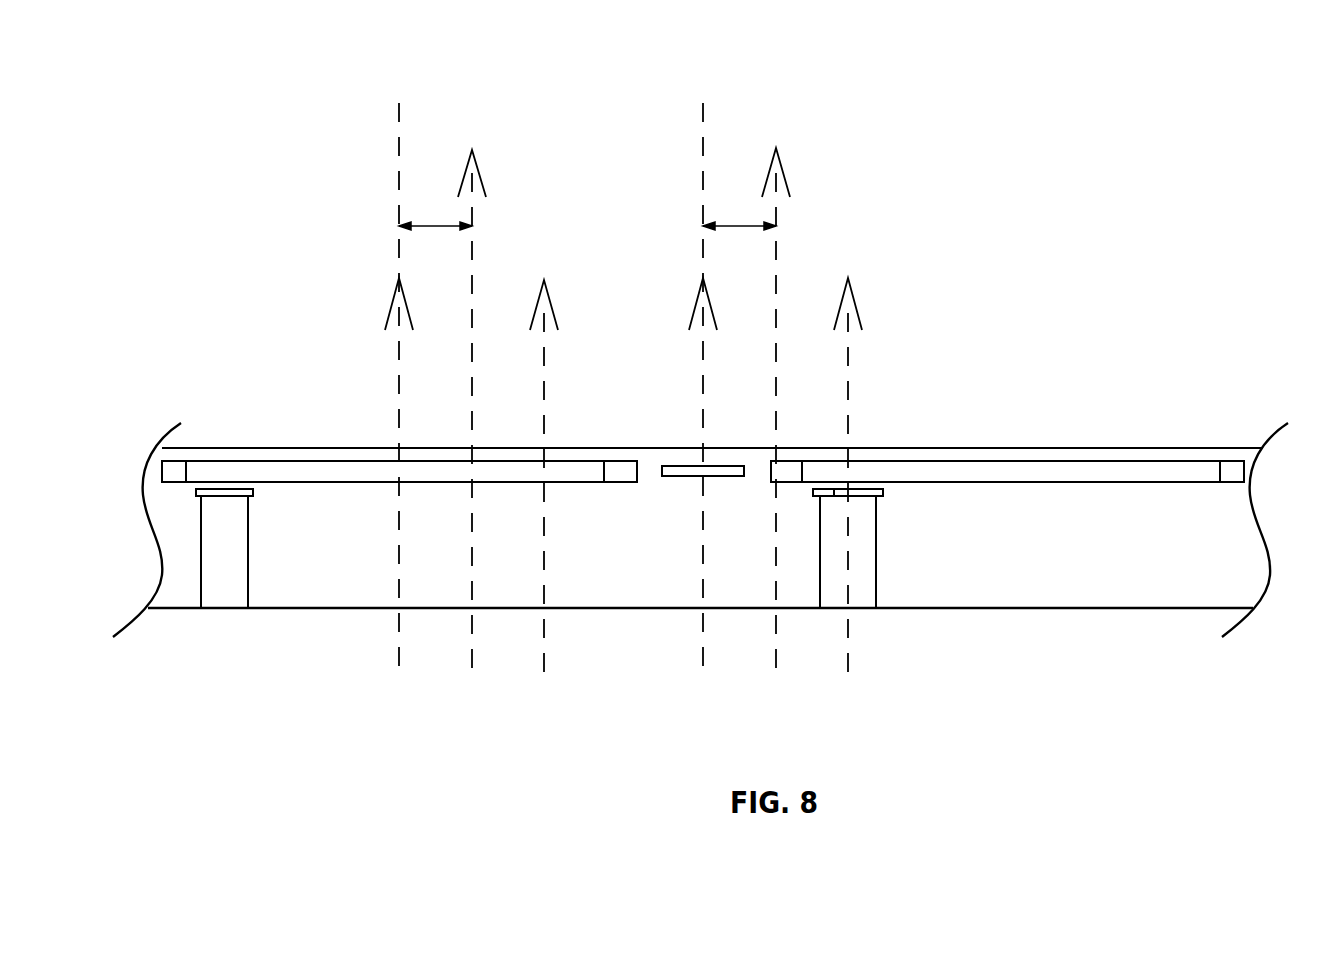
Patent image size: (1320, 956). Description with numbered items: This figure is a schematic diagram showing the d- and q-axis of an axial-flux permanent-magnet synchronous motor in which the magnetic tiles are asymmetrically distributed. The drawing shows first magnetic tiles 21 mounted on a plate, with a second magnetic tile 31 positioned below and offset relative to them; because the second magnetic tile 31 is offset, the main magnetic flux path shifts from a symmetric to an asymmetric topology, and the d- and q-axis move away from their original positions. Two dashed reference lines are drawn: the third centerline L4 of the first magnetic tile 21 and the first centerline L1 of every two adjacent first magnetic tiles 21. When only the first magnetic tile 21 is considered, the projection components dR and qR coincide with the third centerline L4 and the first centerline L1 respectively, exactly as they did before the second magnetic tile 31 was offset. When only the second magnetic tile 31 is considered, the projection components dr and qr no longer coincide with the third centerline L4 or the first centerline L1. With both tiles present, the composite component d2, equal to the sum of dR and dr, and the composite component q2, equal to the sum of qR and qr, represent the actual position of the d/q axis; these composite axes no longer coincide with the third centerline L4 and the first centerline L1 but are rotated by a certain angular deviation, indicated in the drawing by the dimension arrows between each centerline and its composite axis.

The first magnetic tile 21 is at (322, 474).
The second magnetic tile 31 is at (866, 551).
The third centerline L4 is at (402, 362).
The first centerline L1 is at (703, 362).
The composite d-axis component d2 is at (497, 405).
The composite q-axis component q2 is at (801, 405).
The d-axis projection component of the first magnetic tile dR is at (368, 294).
The q-axis projection component of the first magnetic tile qR is at (676, 294).
The d-axis projection component of the second magnetic tile dr is at (562, 467).
The q-axis projection component of the second magnetic tile qr is at (866, 467).